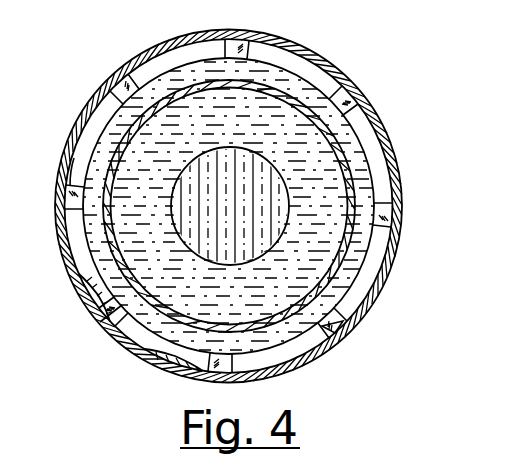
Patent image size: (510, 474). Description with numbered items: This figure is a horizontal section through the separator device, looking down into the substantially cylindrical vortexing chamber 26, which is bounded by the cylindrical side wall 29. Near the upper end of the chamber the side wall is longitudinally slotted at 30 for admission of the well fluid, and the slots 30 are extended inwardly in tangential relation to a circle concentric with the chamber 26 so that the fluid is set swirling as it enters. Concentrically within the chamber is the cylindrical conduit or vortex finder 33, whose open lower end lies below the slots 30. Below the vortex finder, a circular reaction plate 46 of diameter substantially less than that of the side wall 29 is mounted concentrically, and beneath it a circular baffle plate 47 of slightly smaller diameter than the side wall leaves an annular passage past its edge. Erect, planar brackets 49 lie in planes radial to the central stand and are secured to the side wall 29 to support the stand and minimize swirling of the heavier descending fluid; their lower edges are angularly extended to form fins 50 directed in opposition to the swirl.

The vortexing chamber 26 is at (167, 263).
The cylindrical side wall 29 is at (402, 183).
The slots 30 is at (227, 30).
The cylindrical conduit or vortex finder 33 is at (300, 112).
The circular reaction plate 46 is at (245, 196).
The circular baffle plate 47 is at (188, 72).
The planar brackets 49 is at (72, 158).
The fins 50 is at (77, 275).